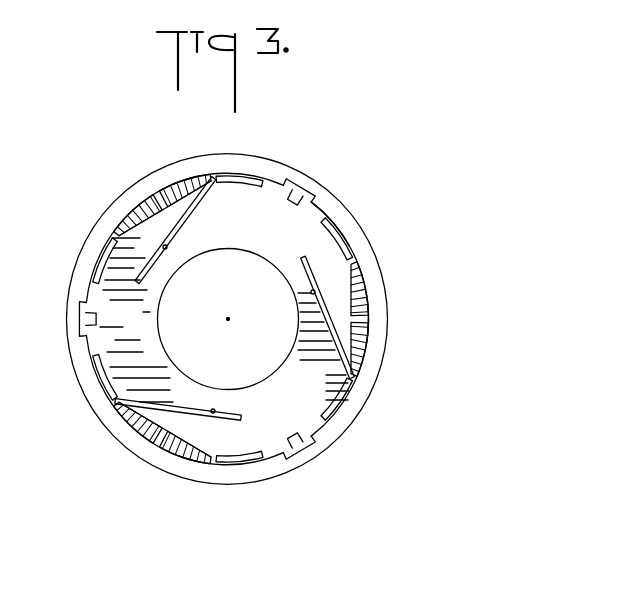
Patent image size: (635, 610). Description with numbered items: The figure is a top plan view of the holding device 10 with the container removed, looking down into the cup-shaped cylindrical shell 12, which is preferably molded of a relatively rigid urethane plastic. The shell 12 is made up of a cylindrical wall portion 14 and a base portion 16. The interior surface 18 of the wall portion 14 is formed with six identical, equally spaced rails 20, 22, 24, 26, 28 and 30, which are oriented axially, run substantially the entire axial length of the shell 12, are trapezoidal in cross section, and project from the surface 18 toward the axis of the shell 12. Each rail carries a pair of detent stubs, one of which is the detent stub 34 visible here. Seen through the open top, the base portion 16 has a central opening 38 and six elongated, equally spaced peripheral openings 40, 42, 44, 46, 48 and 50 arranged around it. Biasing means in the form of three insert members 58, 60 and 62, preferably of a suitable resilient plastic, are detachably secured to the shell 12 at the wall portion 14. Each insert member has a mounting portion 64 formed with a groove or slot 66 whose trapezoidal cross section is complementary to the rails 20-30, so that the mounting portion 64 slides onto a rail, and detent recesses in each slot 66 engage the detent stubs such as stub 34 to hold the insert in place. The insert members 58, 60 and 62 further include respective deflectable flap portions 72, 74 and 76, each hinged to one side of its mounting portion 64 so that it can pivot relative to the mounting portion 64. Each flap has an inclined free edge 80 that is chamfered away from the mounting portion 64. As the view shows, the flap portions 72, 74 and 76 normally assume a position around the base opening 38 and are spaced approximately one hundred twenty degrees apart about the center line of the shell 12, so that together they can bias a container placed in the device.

The holding device 10 is at (358, 137).
The shell 12 is at (376, 246).
The cylindrical wall portion 14 is at (293, 167).
The base portion 16 is at (292, 390).
The interior surface 18 is at (335, 197).
The rail 20 is at (303, 185).
The rail 22 is at (363, 312).
The rail 24 is at (302, 443).
The rail 26 is at (160, 443).
The rail 28 is at (88, 322).
The rail 30 is at (160, 200).
The detent stub 34 is at (97, 322).
The central opening 38 is at (221, 304).
The peripheral opening 40 is at (247, 178).
The peripheral opening 42 is at (330, 220).
The peripheral opening 44 is at (343, 405).
The peripheral opening 46 is at (253, 460).
The peripheral opening 48 is at (98, 377).
The peripheral opening 50 is at (92, 273).
The insert member 58 is at (182, 172).
The insert member 60 is at (376, 333).
The insert member 62 is at (188, 465).
The mounting portion 64 is at (142, 212).
The slot 66 is at (174, 187).
The flap portion 72 is at (195, 207).
The flap portion 74 is at (312, 270).
The flap portion 76 is at (186, 406).
The free edge 80 is at (167, 246).